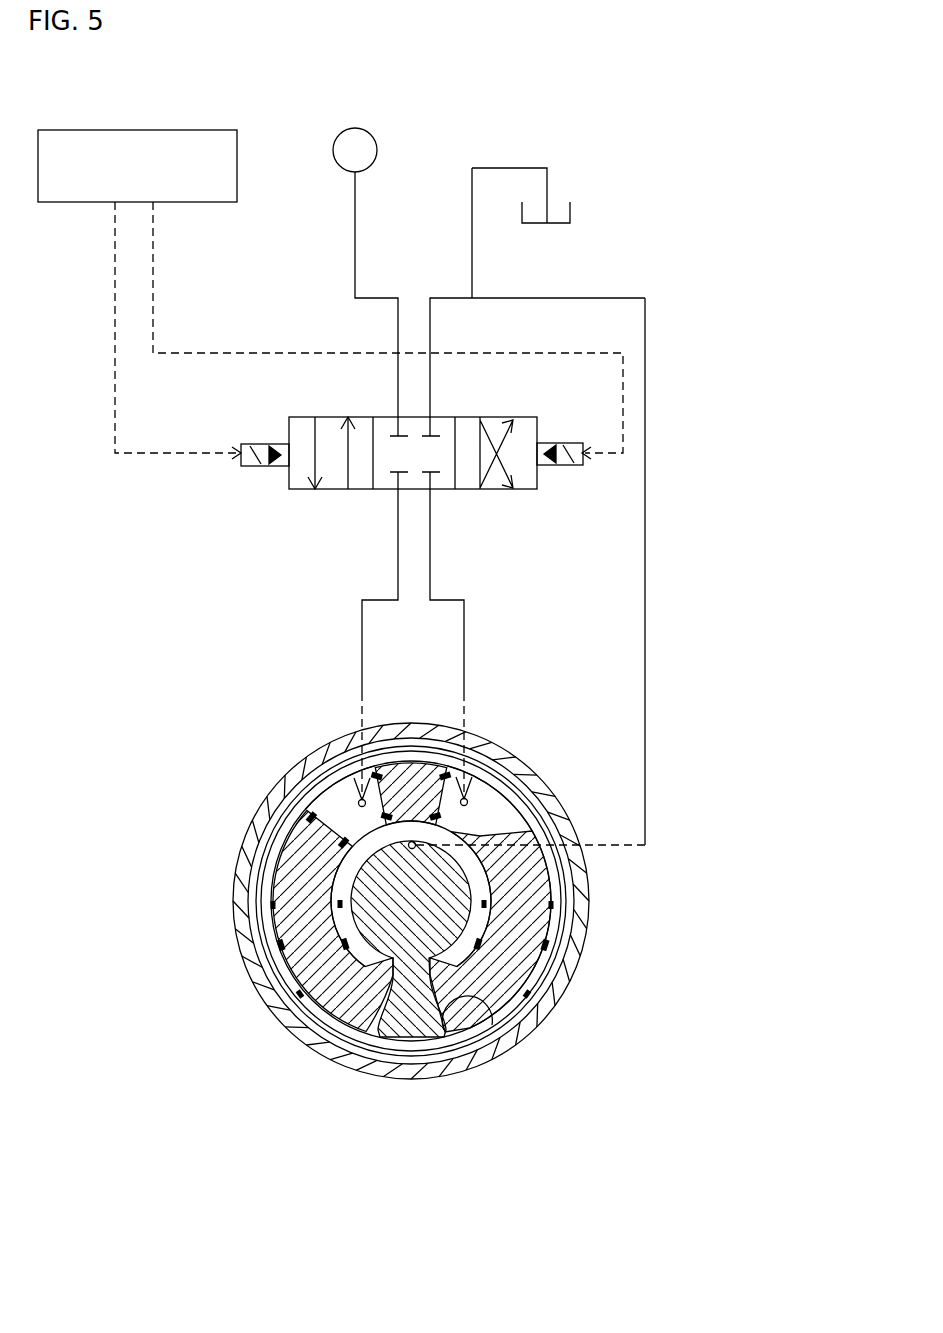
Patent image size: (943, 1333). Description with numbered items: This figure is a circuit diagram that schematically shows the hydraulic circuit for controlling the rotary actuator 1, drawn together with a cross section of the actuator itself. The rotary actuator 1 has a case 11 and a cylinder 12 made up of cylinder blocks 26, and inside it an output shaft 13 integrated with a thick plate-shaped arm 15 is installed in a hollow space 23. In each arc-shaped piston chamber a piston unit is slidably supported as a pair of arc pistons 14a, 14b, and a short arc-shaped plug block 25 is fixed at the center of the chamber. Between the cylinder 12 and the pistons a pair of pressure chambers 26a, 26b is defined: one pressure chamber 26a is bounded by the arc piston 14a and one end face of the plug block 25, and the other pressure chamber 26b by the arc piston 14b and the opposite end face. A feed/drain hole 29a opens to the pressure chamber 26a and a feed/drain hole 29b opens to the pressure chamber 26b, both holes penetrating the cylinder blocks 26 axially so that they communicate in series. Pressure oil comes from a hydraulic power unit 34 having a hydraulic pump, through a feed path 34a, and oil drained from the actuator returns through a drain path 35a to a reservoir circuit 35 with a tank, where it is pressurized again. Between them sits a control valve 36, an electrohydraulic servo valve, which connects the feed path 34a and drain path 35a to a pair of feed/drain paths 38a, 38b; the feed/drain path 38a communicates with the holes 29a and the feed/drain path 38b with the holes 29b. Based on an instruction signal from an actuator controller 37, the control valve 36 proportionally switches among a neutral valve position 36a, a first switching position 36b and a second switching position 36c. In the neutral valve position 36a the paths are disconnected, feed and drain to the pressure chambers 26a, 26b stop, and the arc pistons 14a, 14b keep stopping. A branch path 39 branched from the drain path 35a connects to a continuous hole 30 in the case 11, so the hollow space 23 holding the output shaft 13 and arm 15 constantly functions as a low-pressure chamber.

The rotary actuator 1 is at (451, 943).
The case 11 is at (582, 938).
The cylinder 12 is at (516, 901).
The output shaft 13 is at (330, 982).
The arc piston 14a is at (558, 1025).
The arc piston 14b is at (348, 1040).
The arm 15 is at (413, 1048).
The hollow space 23 is at (440, 1008).
The plug block 25 is at (418, 770).
The cylinder block 26 is at (560, 877).
The pressure chamber 26a is at (493, 803).
The pressure chamber 26b is at (287, 772).
The feed/drain hole 29a is at (465, 800).
The feed/drain hole 29b is at (323, 807).
The continuous hole 30 is at (408, 846).
The hydraulic power unit 34 is at (365, 130).
The feed path 34a is at (355, 237).
The reservoir circuit 35 is at (578, 175).
The drain path 35a is at (430, 318).
The control valve 36 is at (400, 473).
The neutral valve position 36a is at (445, 417).
The first switching position 36b is at (527, 417).
The second switching position 36c is at (289, 417).
The actuator controller 37 is at (192, 128).
The feed/drain path 38a is at (430, 548).
The feed/drain path 38b is at (398, 530).
The branch path 39 is at (648, 398).